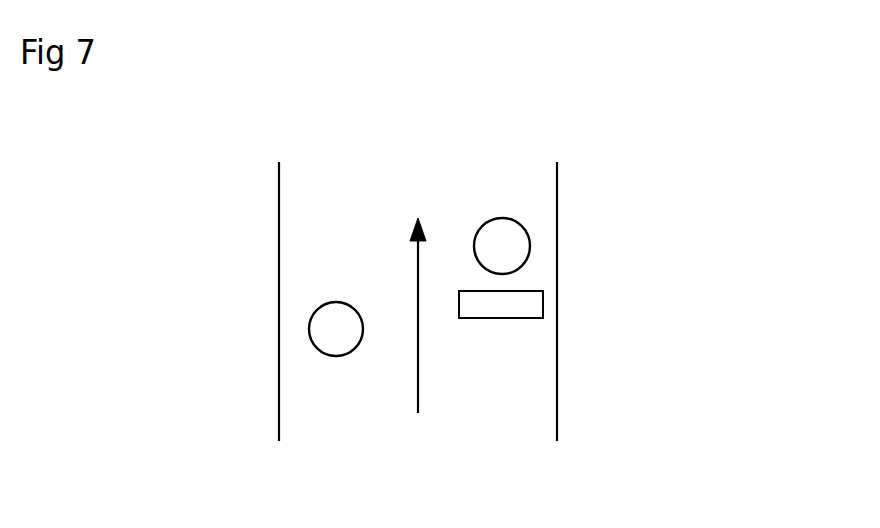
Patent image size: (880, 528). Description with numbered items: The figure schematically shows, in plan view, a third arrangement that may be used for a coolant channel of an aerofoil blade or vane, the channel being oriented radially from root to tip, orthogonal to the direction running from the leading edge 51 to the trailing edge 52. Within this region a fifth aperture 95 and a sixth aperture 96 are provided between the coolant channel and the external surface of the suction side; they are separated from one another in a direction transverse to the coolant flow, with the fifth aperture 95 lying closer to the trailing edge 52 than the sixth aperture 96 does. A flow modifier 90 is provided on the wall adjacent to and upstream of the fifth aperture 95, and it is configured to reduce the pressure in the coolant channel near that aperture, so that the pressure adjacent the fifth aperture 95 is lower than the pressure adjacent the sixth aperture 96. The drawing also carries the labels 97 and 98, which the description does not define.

The leading edge 51 is at (140, 275).
The trailing edge 52 is at (697, 275).
The flow modifier 90 is at (543, 313).
The fifth aperture 95 is at (502, 246).
The sixth aperture 96 is at (335, 329).
The gap / spacing 97 is at (540, 257).
The gap / spacing 98 is at (296, 319).